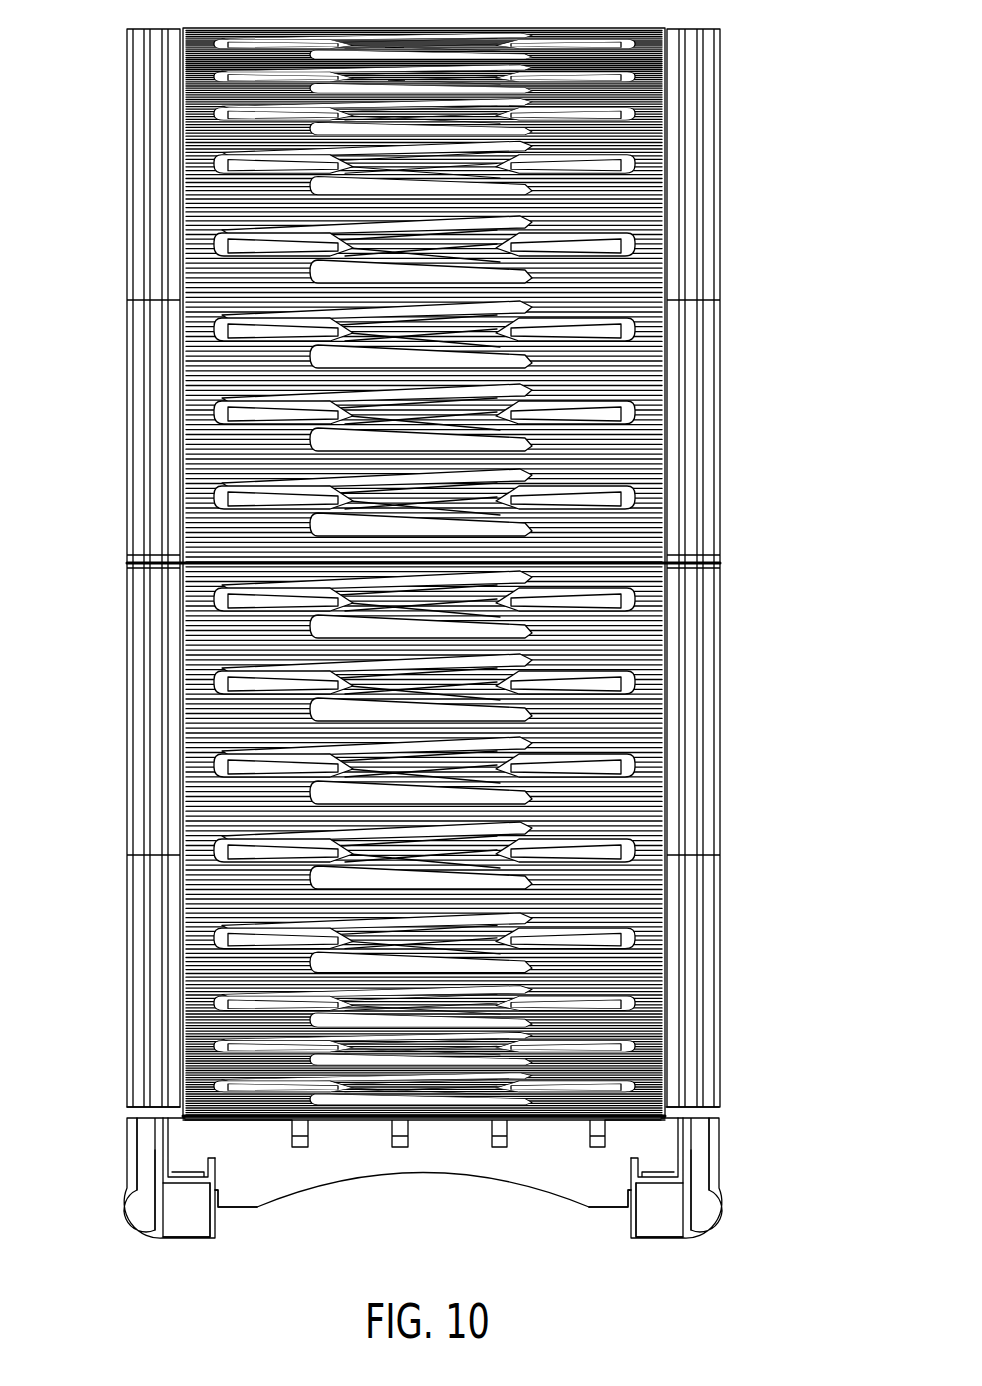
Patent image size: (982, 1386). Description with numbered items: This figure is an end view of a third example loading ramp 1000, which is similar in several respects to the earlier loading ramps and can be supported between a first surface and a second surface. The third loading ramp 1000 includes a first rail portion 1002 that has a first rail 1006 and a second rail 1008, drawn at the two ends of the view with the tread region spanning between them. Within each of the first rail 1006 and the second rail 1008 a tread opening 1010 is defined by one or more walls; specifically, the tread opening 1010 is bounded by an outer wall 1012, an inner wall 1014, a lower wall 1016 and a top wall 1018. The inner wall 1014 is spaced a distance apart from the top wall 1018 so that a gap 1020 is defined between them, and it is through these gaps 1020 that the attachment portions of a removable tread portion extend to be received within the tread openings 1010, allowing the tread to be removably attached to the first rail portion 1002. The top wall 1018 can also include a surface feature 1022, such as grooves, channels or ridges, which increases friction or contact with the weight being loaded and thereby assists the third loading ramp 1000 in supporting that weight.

The third loading ramp 1000 is at (105, 82).
The first rail portion 1002 is at (474, 1216).
The first rail 1006 is at (132, 1188).
The second rail 1008 is at (722, 1185).
The tread opening 1010 is at (182, 1127).
The outer wall 1012 is at (155, 1157).
The inner wall 1014 is at (215, 1165).
The lower wall 1016 is at (180, 1183).
The top wall 1018 is at (157, 1107).
The gap 1020 is at (204, 1138).
The surface feature 1022 is at (143, 950).